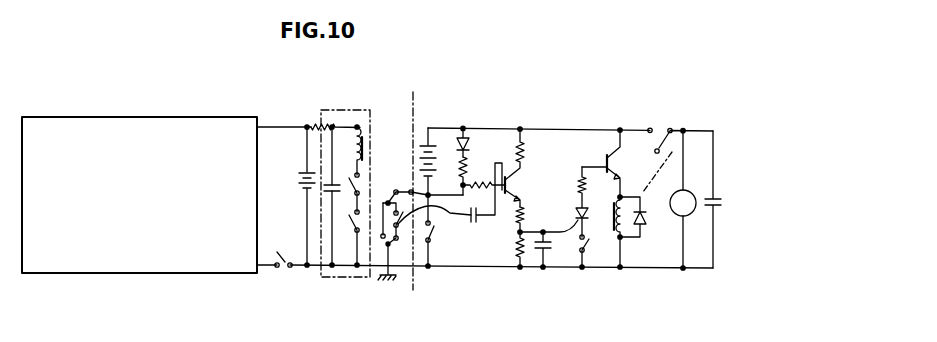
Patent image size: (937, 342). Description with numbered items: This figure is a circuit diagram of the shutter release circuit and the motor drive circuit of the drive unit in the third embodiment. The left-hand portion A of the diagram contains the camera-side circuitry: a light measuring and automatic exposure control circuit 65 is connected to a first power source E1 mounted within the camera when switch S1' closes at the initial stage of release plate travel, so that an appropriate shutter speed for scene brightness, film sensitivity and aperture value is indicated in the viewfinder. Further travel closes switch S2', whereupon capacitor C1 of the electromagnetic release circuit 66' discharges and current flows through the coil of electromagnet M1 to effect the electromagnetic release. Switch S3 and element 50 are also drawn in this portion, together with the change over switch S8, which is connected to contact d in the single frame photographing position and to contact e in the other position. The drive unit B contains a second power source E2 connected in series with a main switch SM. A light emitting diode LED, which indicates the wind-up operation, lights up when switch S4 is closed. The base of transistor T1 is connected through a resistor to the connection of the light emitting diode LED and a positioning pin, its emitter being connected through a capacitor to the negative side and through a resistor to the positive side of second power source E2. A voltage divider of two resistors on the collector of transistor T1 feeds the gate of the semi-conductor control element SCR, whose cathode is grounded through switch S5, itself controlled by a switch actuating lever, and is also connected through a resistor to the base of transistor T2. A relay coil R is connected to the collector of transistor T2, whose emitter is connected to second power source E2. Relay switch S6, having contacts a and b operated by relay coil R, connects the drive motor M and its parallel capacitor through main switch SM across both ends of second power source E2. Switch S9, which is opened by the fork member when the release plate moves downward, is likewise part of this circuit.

The light measuring and automatic exposure control circuit 65 is at (138, 263).
The circuit section A is at (307, 110).
The drive unit B is at (565, 118).
The electromagnetic release circuit 66' is at (334, 94).
The electromagnet M1 is at (352, 127).
The switch S4 is at (397, 188).
The switch 50 is at (387, 201).
The capacitor C1 is at (329, 183).
The first power source E1 is at (299, 181).
The switch S3 is at (356, 184).
The switch S1' is at (266, 279).
The switch S2' is at (321, 260).
The contact e is at (377, 232).
The contact d is at (402, 249).
The change over switch S8 is at (392, 251).
The second power source E2 is at (437, 163).
The light emitting diode LED is at (475, 134).
The transistor T1 is at (519, 181).
The switch S9 is at (434, 225).
The main switch SM is at (430, 239).
The semi-conductor control element SCR is at (560, 202).
The relay coil R is at (617, 221).
The transistor T2 is at (606, 160).
The contact a is at (649, 128).
The contact b is at (655, 154).
The relay switch S6 is at (670, 128).
The switch S5 is at (589, 246).
The drive motor M is at (683, 200).